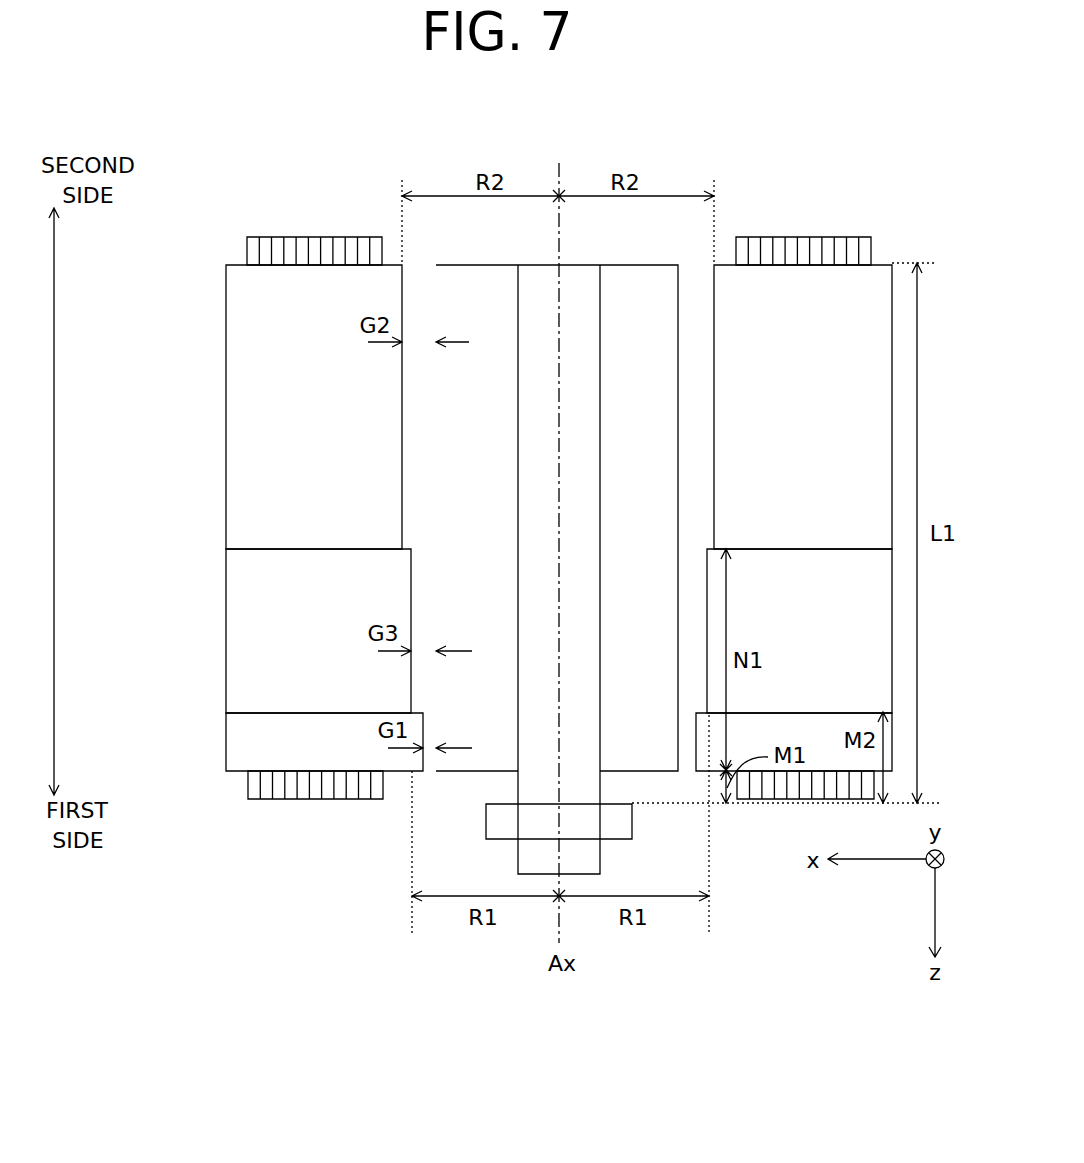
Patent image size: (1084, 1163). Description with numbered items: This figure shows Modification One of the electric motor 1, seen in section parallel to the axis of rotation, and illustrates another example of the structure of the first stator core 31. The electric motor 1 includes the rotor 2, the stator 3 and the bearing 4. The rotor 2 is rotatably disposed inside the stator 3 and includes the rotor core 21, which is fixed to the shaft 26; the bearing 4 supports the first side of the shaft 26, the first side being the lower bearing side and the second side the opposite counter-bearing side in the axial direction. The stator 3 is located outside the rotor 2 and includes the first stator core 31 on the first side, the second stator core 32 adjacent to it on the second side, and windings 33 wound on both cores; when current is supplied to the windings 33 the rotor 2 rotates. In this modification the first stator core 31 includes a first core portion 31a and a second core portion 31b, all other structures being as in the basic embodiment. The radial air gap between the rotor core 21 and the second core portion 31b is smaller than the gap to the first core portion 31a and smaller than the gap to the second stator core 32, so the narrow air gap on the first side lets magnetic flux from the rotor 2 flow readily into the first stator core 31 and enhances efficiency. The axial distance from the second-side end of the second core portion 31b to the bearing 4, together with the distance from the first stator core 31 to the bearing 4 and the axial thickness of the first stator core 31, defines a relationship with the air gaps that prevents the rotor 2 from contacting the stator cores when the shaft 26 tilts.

The electric motor 1 is at (188, 177).
The rotor 2 is at (695, 253).
The stator 3 is at (113, 416).
The bearing 4 is at (618, 823).
The rotor core 21 is at (458, 290).
The shaft 26 is at (536, 288).
The first stator core 31 is at (167, 642).
The first core portion 31a is at (297, 657).
The second core portion 31b is at (297, 738).
The second stator core 32 is at (290, 443).
The windings 33 is at (315, 253).